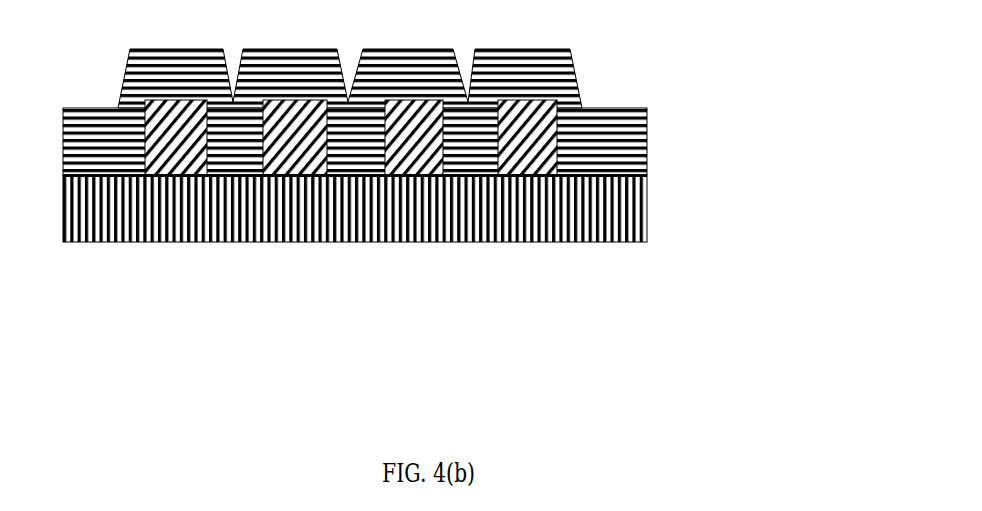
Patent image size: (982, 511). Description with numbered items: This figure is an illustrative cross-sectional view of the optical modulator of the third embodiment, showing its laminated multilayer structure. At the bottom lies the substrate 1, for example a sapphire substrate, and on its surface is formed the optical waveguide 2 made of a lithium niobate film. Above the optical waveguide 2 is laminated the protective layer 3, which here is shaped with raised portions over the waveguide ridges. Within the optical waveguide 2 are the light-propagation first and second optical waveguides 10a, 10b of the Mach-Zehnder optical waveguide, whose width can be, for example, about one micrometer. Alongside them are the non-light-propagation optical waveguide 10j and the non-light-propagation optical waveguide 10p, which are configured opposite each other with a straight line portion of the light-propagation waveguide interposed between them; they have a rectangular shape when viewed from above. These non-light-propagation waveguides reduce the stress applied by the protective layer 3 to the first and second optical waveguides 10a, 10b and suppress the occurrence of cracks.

The substrate 1 is at (424, 208).
The optical waveguide 2 is at (436, 141).
The protective layer 3 is at (401, 69).
The non-light-propagation optical waveguide 10p is at (182, 260).
The first optical waveguide 10a is at (304, 260).
The second optical waveguide 10b is at (420, 260).
The non-light-propagation optical waveguide 10j is at (537, 260).